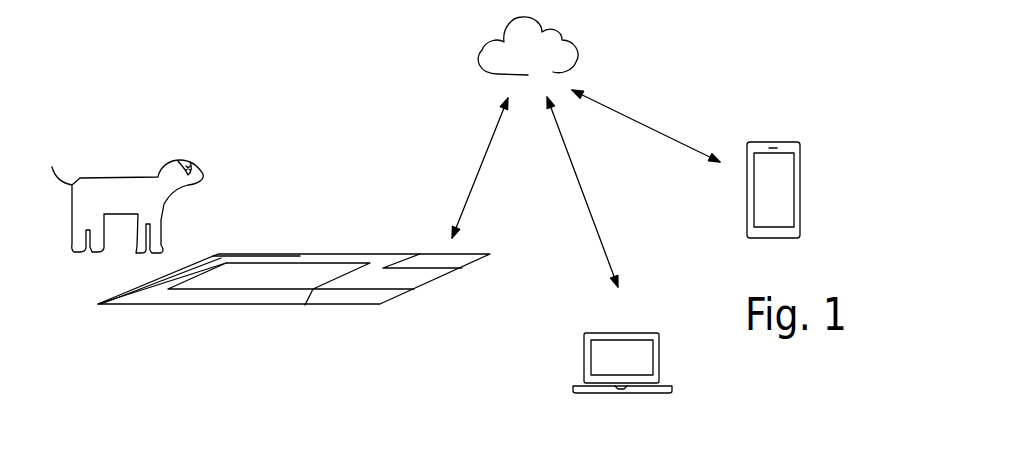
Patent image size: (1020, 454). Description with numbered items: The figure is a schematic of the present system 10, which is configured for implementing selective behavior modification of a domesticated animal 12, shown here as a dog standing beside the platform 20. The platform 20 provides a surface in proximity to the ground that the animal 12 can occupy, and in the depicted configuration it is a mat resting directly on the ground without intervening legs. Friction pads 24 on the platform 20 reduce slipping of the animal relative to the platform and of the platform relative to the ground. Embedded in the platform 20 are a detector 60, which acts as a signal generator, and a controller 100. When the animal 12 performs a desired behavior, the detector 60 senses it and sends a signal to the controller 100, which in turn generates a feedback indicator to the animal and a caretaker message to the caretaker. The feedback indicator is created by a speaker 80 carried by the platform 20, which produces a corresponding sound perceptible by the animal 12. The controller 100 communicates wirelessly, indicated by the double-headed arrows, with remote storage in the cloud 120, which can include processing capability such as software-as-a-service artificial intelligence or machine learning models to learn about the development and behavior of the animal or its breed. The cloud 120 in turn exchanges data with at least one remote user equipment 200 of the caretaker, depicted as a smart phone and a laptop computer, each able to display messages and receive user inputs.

The system 10 is at (303, 111).
The domesticated animal 12 is at (137, 168).
The platform 20 is at (172, 306).
The friction pads 24 is at (222, 256).
The detector 60 is at (291, 262).
The speaker 80 is at (305, 305).
The controller 100 is at (447, 263).
The cloud 120 is at (538, 62).
The user equipment 200 is at (800, 210).